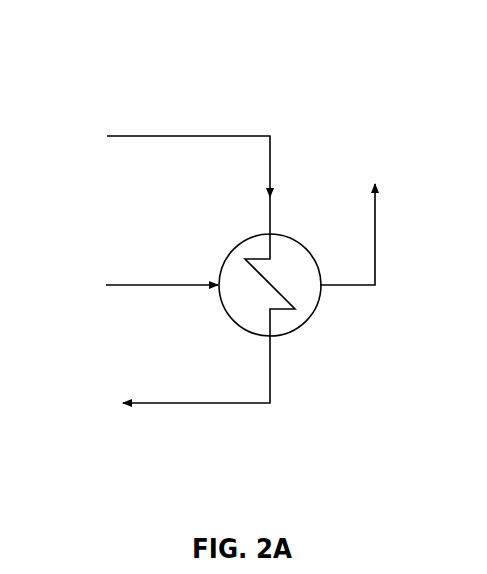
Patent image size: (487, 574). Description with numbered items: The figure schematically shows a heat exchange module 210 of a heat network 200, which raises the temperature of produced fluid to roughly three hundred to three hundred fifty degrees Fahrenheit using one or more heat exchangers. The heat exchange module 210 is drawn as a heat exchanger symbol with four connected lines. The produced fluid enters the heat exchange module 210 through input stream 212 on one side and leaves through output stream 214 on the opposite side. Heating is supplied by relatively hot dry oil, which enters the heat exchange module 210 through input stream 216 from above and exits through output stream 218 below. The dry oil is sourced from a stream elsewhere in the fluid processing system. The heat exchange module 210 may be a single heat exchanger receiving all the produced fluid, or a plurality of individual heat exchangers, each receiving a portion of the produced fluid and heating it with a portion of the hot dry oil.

The heat network 200 is at (105, 42).
The heat exchange module 210 is at (295, 237).
The input stream 212 is at (170, 288).
The output stream 214 is at (376, 233).
The input stream 216 is at (173, 135).
The output stream 218 is at (204, 406).